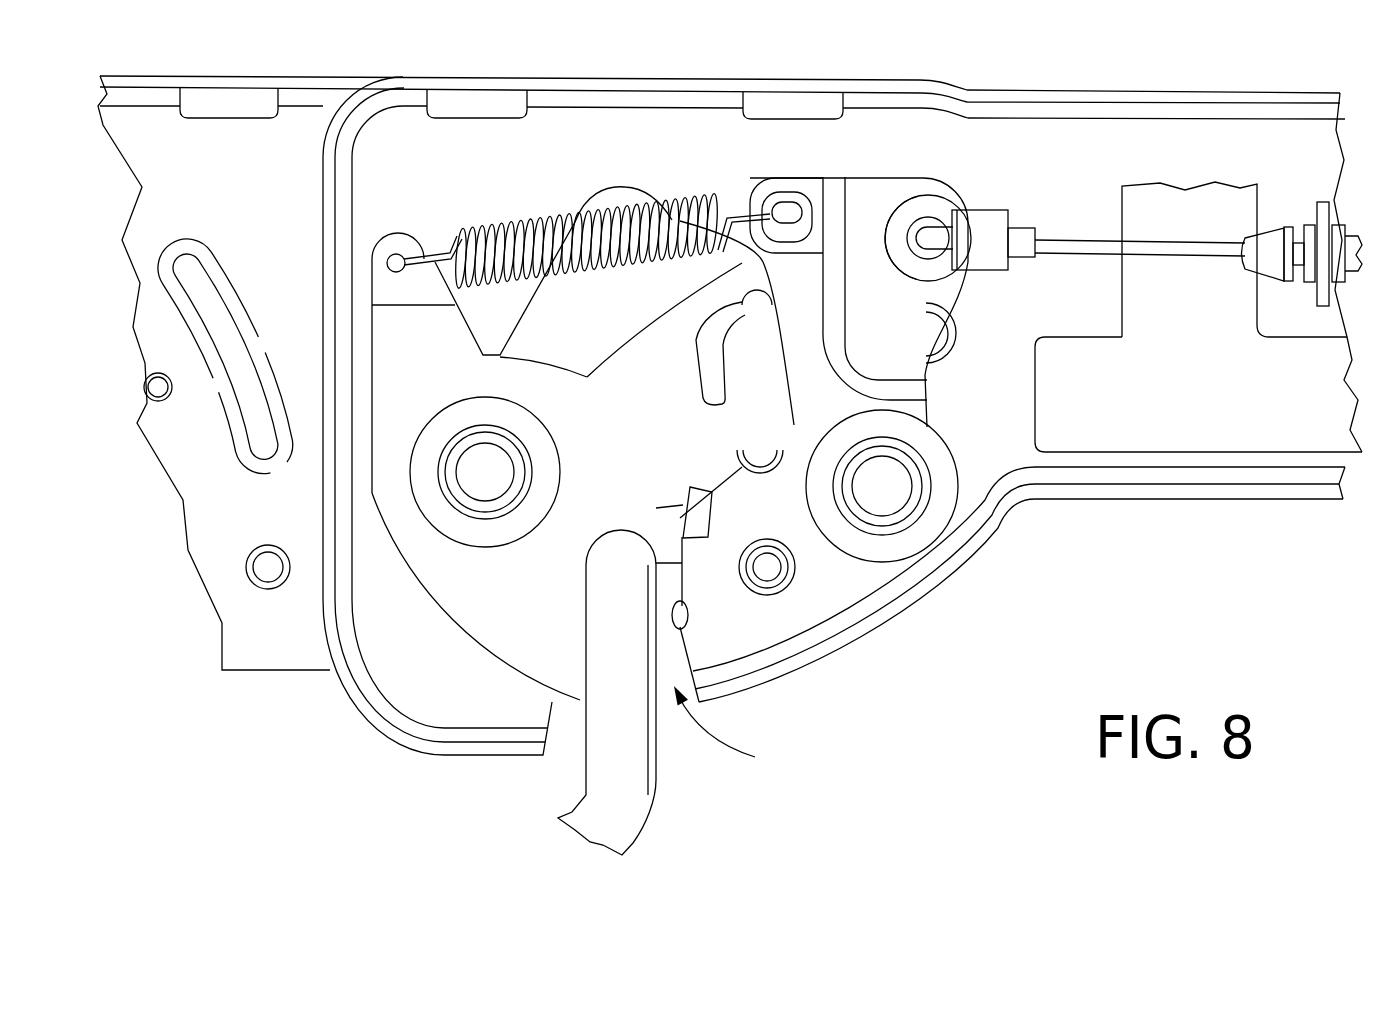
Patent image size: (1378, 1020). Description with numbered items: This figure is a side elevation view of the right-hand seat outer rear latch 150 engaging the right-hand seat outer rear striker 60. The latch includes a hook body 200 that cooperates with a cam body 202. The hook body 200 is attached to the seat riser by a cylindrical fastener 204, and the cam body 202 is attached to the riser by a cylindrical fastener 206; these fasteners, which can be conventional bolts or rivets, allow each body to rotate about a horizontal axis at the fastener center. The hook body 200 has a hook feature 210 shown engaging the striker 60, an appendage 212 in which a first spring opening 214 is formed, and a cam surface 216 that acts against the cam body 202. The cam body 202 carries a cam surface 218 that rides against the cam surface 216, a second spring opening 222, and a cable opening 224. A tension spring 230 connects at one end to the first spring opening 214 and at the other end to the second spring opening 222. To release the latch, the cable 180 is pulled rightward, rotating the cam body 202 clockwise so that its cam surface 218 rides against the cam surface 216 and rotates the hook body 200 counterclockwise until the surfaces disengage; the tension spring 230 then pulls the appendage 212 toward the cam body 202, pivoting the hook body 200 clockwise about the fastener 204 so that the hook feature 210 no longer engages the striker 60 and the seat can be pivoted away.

The right-hand seat outer rear striker 60 is at (625, 818).
The right-hand seat outer rear latch 150 is at (738, 730).
The first cable 180 is at (1178, 254).
The hook body 200 is at (492, 642).
The cam body 202 is at (903, 374).
The cylindrical fastener 204 is at (482, 480).
The cylindrical fastener 206 is at (887, 484).
The hook feature 210 is at (687, 626).
The appendage 212 is at (375, 270).
The first spring opening 214 is at (395, 254).
The cam surface 216 is at (738, 425).
The cam surface 218 is at (758, 300).
The second spring opening 222 is at (787, 200).
The cable opening 224 is at (880, 222).
The tension spring 230 is at (497, 230).